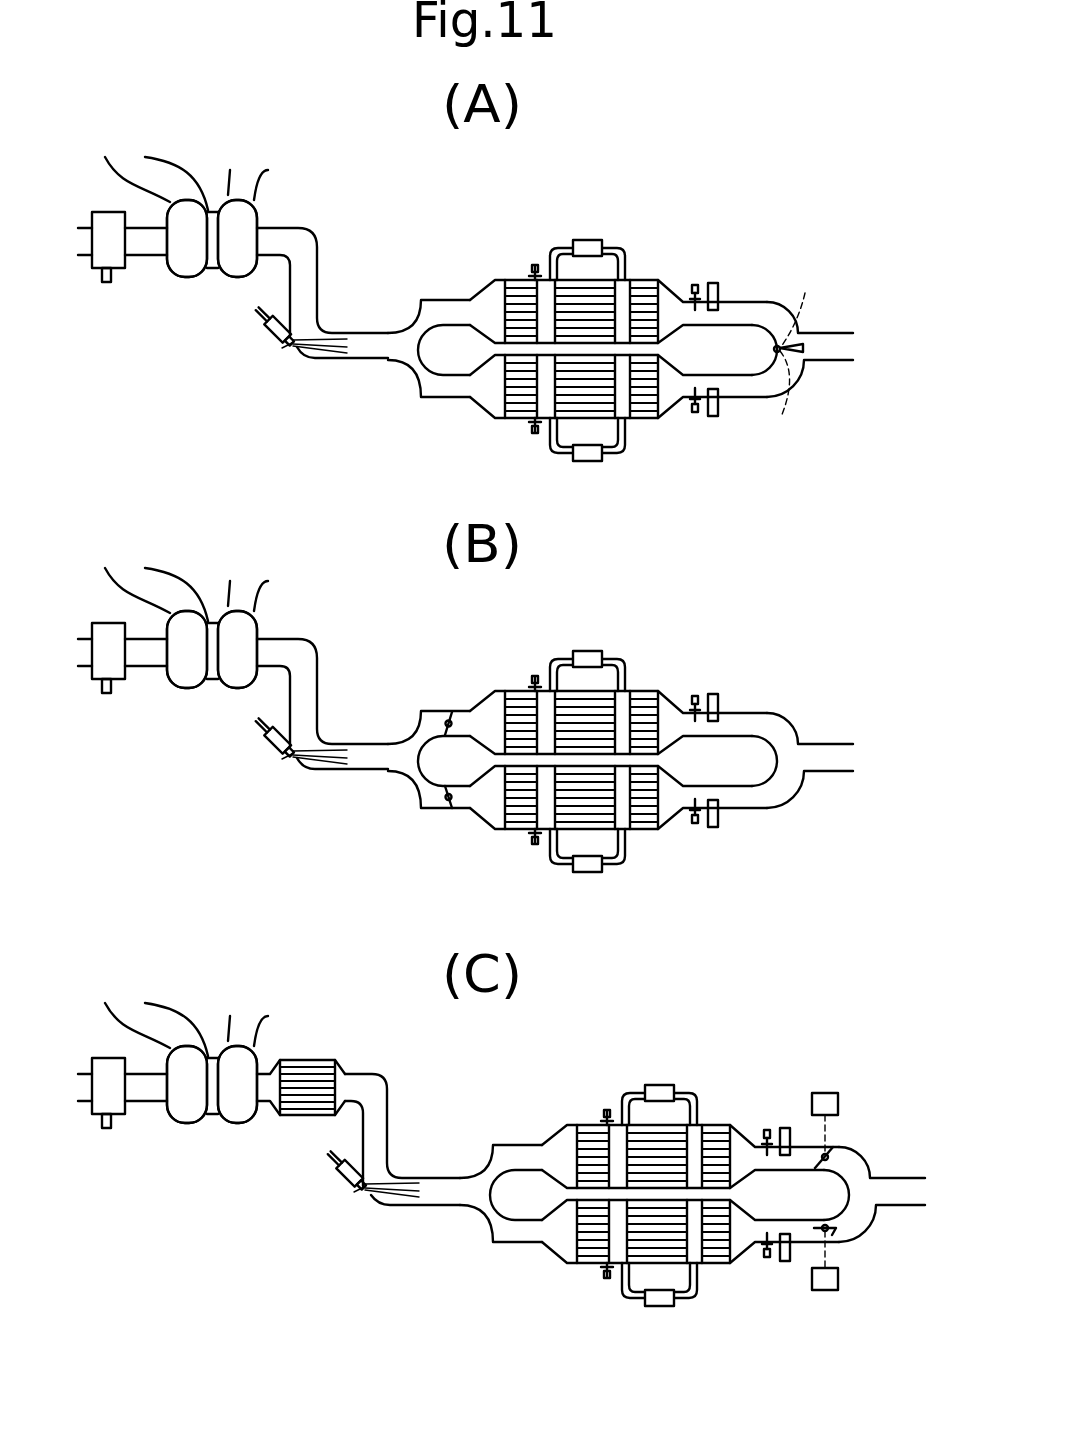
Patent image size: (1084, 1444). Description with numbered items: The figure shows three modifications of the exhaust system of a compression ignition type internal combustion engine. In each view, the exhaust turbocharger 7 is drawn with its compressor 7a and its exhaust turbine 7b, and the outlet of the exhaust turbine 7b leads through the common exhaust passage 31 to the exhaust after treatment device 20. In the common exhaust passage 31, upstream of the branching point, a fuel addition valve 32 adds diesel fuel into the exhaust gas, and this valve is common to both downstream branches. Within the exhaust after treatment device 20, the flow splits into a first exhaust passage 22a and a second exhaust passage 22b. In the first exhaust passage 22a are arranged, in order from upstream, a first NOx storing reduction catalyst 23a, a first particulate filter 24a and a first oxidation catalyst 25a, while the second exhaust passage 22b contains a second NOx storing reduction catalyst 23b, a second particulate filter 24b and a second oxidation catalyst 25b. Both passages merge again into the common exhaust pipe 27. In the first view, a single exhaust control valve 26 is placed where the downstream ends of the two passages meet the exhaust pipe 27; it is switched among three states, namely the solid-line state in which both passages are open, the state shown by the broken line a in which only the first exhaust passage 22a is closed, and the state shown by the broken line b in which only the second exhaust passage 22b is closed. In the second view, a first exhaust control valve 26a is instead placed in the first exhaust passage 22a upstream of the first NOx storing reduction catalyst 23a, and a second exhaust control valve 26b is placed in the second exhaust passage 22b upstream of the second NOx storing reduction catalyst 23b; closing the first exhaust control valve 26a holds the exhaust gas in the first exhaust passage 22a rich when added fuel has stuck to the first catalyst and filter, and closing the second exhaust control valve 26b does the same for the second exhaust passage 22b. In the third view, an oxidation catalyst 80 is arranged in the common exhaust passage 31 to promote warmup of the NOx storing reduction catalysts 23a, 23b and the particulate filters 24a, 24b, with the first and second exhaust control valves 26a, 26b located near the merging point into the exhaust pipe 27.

The exhaust turbocharger 7 is at (212, 708).
The compressor 7a is at (180, 278).
The exhaust turbine 7b is at (242, 278).
The exhaust after treatment device 20 is at (410, 296).
The first exhaust passage 22a is at (448, 305).
The second exhaust passage 22b is at (400, 384).
The first NOx storing reduction catalyst 23a is at (517, 290).
The second NOx storing reduction catalyst 23b is at (520, 409).
The first particulate filter 24a is at (598, 293).
The second particulate filter 24b is at (600, 407).
The first oxidation catalyst 25a is at (645, 292).
The second oxidation catalyst 25b is at (645, 405).
The single exhaust control valve 26 is at (803, 362).
The first exhaust control valve 26a is at (672, 912).
The second exhaust control valve 26b is at (654, 1038).
The common exhaust pipe 27 is at (838, 340).
The common exhaust passage 31 is at (305, 262).
The fuel addition valve 32 is at (342, 336).
The oxidation catalyst 80 is at (301, 1059).
The broken line a is at (795, 308).
The broken line b is at (781, 401).